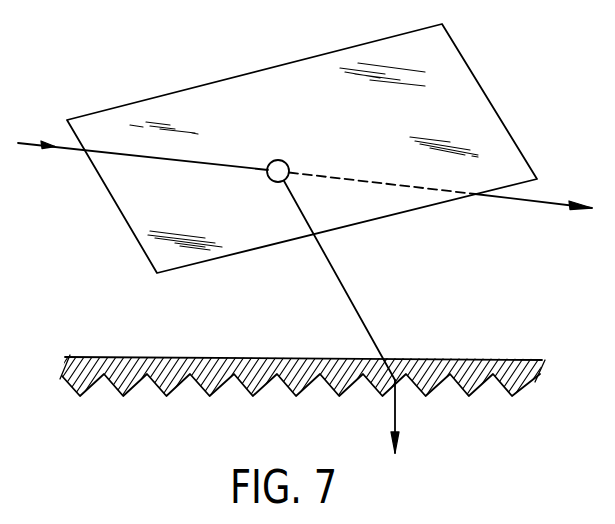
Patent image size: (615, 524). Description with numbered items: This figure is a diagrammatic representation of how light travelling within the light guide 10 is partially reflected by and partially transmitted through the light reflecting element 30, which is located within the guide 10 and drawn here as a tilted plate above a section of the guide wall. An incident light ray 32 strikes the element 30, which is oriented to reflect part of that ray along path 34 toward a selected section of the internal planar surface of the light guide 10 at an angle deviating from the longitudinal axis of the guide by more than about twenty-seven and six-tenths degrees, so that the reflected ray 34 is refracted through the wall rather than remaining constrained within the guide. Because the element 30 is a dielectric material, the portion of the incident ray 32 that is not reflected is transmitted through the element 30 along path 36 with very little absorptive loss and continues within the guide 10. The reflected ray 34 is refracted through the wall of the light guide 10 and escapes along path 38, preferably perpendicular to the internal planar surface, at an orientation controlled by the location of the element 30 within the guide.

The light guide 10 is at (140, 383).
The light reflecting element 30 is at (299, 73).
The incident light ray 32 is at (70, 150).
The reflected ray path 34 is at (343, 288).
The transmitted light path 36 is at (527, 205).
The escaping light path 38 is at (397, 413).